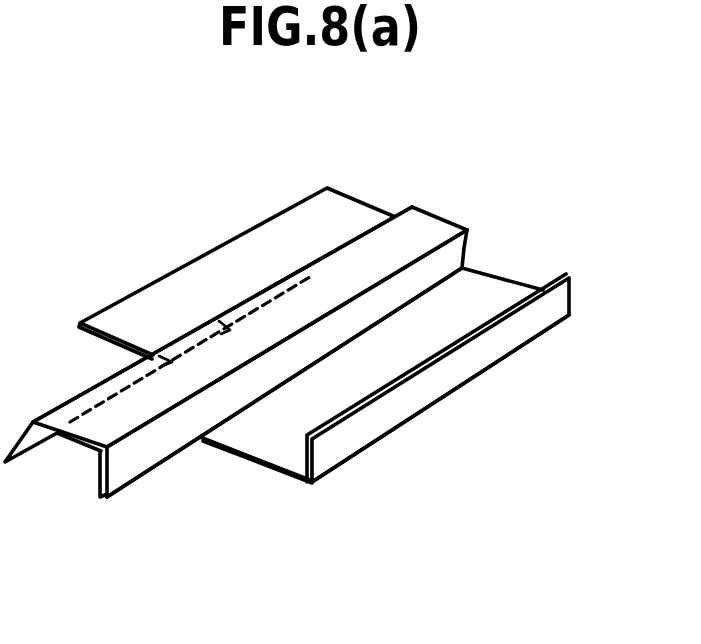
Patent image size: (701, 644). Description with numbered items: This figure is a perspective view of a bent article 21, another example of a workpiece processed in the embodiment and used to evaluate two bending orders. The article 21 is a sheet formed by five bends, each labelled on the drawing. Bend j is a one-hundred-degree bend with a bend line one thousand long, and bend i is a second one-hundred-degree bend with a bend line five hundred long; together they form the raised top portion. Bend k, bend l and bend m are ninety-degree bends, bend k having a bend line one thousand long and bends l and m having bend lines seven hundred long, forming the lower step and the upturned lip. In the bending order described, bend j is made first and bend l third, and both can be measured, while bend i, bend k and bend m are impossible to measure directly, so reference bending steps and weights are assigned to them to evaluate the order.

The bent article 21 is at (305, 343).
The bend i is at (221, 328).
The bend j is at (93, 387).
The bend k is at (163, 412).
The bend l is at (270, 395).
The bend m is at (407, 418).